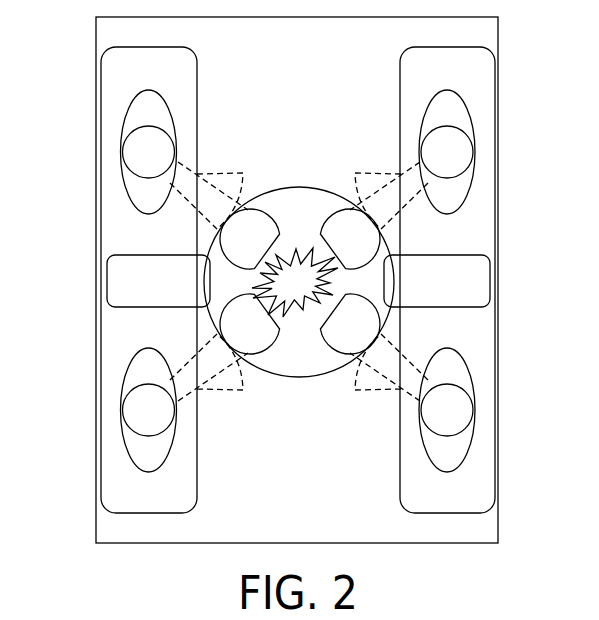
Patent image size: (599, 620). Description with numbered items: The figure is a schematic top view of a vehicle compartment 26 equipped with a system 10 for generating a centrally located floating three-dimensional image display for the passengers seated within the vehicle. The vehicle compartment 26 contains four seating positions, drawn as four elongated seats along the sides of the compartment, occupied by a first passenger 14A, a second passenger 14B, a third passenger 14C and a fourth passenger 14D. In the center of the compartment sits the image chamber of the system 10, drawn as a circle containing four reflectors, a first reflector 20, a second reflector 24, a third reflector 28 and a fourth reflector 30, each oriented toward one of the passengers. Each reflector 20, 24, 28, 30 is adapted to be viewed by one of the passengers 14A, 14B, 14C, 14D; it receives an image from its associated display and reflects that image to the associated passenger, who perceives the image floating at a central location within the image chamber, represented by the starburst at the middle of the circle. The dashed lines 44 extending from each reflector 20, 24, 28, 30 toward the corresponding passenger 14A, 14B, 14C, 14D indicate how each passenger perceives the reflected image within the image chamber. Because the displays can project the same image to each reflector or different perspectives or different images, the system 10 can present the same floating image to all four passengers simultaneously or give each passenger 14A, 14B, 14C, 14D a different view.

The system 10 is at (303, 187).
The first passenger 14A is at (140, 112).
The second passenger 14B is at (458, 108).
The third passenger 14C is at (152, 452).
The fourth passenger 14D is at (450, 449).
The first reflector 20 is at (250, 239).
The second reflector 24 is at (350, 239).
The third reflector 28 is at (250, 324).
The fourth reflector 30 is at (350, 324).
The lines 44 is at (243, 173).
The vehicle compartment 26 is at (462, 544).